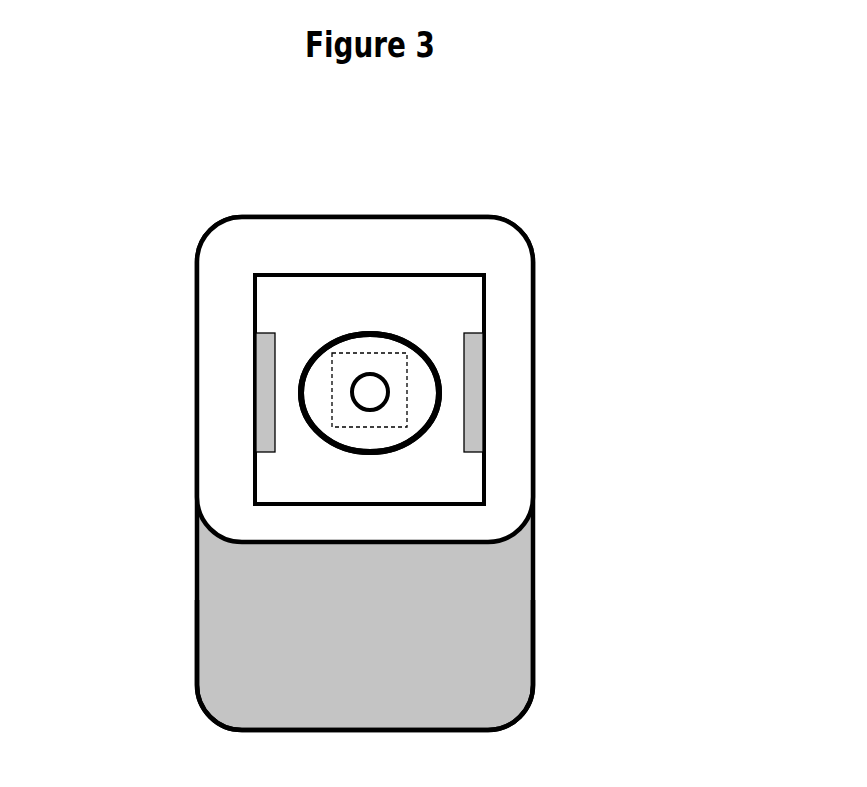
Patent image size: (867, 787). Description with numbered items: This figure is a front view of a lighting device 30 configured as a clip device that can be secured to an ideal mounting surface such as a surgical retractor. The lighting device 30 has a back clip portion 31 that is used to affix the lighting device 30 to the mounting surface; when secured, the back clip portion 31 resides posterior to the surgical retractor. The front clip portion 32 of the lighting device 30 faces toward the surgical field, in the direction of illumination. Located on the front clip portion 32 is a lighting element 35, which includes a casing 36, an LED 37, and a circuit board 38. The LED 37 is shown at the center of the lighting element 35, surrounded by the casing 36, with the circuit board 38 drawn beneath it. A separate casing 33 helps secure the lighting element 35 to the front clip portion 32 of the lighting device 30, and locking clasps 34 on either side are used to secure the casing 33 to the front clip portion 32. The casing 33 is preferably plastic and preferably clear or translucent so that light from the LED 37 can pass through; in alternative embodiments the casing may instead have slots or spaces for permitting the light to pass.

The lighting device 30 is at (607, 670).
The back clip portion 31 is at (197, 608).
The front clip portion 32 is at (197, 385).
The casing 33 is at (487, 485).
The locking clasps 34 is at (248, 360).
The lighting element 35 is at (368, 322).
The casing 36 is at (322, 345).
The LED 37 is at (388, 380).
The circuit board 38 is at (390, 353).